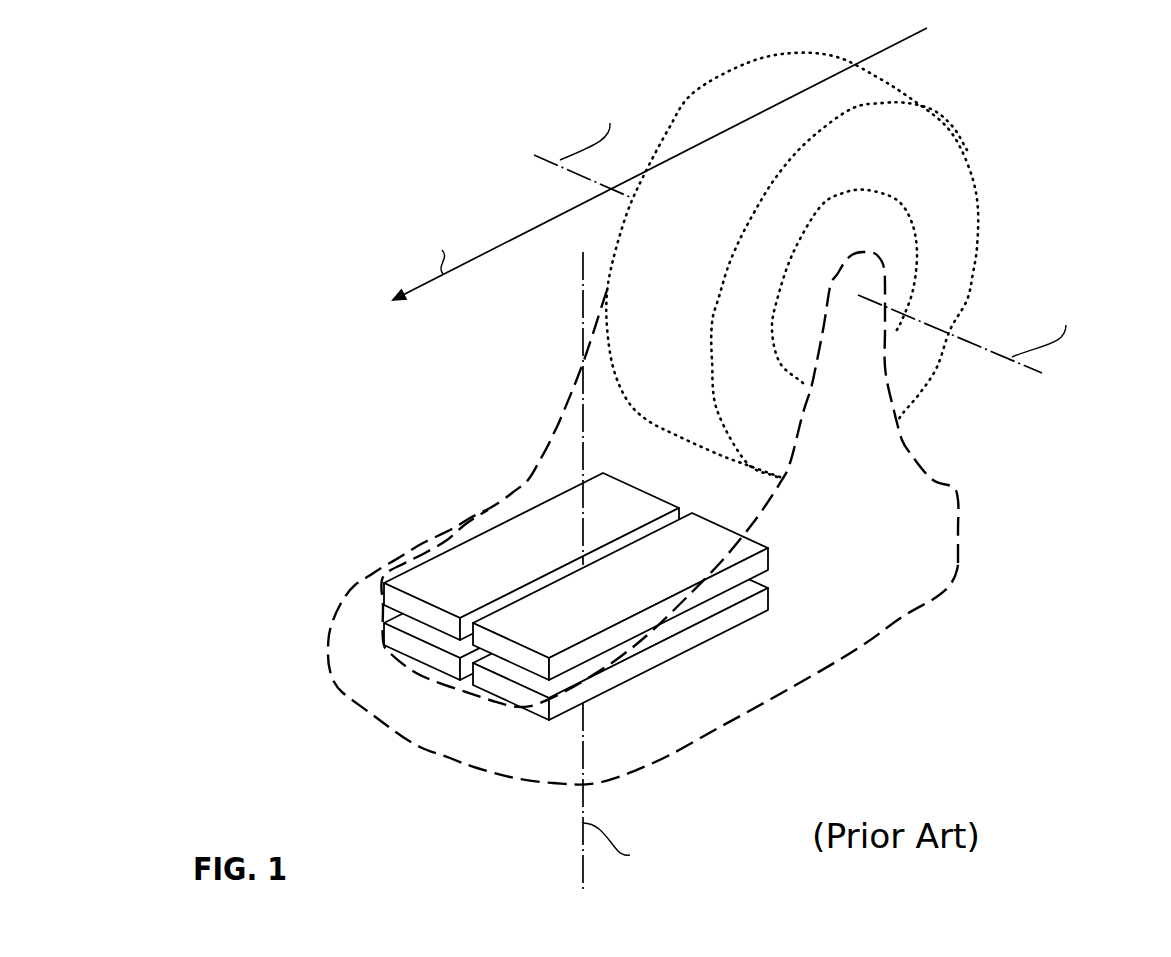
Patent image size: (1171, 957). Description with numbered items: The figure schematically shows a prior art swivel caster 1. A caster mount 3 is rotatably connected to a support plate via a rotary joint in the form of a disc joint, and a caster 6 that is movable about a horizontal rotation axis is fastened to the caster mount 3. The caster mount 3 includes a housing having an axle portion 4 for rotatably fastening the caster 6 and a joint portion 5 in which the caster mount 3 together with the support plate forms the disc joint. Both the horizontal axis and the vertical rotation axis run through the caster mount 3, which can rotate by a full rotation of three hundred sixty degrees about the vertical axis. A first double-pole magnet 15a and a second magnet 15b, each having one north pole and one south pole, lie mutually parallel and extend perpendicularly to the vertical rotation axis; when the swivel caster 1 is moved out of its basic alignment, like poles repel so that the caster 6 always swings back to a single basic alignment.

The swivel caster 1 is at (738, 460).
The caster mount 3 is at (848, 513).
The axle portion 4 is at (855, 305).
The joint portion 5 is at (798, 573).
The caster 6 is at (935, 185).
The first double-pole magnet 15a is at (414, 583).
The second magnet 15b is at (428, 652).